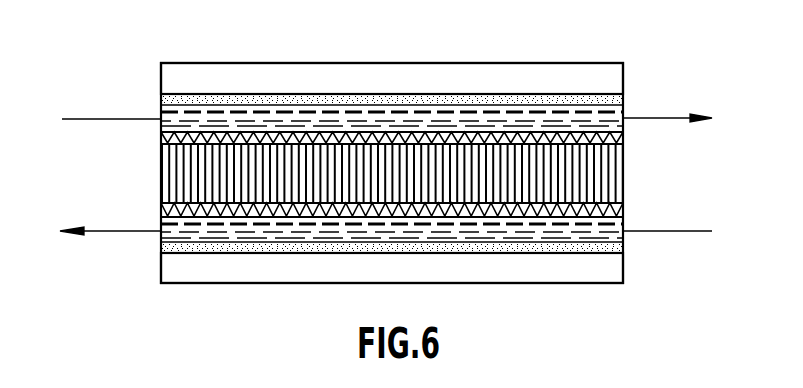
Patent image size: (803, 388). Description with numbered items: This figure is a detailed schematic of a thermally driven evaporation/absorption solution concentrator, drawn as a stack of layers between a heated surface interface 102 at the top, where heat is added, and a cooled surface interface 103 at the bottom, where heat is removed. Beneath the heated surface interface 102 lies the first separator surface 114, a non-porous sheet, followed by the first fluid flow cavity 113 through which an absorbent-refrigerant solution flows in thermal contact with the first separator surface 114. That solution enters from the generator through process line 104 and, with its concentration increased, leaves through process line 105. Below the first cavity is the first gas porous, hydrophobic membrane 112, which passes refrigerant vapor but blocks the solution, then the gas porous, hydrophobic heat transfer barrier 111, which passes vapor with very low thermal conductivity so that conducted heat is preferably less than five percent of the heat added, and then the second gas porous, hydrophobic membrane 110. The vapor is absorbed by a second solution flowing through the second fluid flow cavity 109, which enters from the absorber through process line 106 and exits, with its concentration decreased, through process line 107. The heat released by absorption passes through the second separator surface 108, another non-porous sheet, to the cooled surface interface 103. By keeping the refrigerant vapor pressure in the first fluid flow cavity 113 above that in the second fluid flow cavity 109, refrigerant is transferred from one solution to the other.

The heated surface interface 102 is at (594, 72).
The cooled surface interface 103 is at (578, 268).
The process line 104 is at (82, 118).
The process line 105 is at (676, 117).
The process line 106 is at (676, 232).
The process line 107 is at (92, 230).
The second separator surface 108 is at (213, 247).
The second fluid flow cavity 109 is at (161, 238).
The second gas porous, hydrophobic membrane 110 is at (161, 212).
The gas porous, hydrophobic heat transfer barrier 111 is at (625, 178).
The first gas porous, hydrophobic membrane 112 is at (625, 138).
The first fluid flow cavity 113 is at (161, 113).
The first separator surface 114 is at (523, 95).